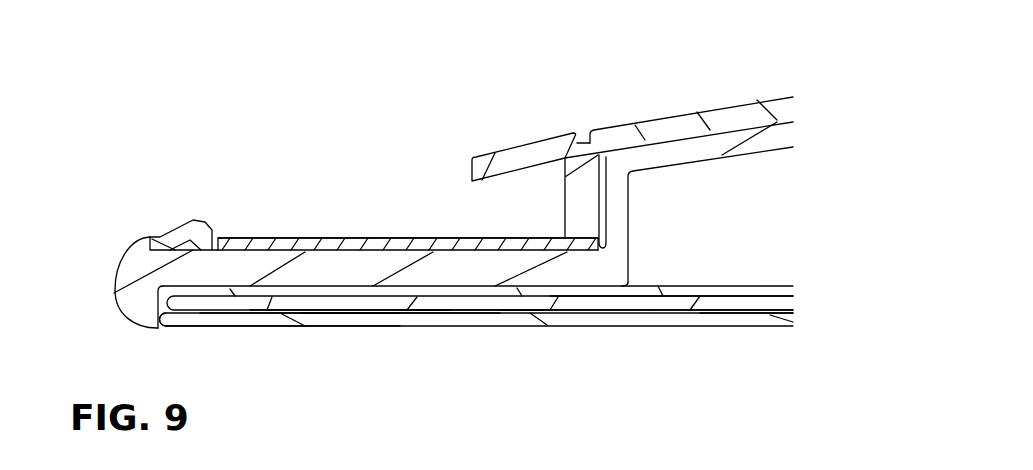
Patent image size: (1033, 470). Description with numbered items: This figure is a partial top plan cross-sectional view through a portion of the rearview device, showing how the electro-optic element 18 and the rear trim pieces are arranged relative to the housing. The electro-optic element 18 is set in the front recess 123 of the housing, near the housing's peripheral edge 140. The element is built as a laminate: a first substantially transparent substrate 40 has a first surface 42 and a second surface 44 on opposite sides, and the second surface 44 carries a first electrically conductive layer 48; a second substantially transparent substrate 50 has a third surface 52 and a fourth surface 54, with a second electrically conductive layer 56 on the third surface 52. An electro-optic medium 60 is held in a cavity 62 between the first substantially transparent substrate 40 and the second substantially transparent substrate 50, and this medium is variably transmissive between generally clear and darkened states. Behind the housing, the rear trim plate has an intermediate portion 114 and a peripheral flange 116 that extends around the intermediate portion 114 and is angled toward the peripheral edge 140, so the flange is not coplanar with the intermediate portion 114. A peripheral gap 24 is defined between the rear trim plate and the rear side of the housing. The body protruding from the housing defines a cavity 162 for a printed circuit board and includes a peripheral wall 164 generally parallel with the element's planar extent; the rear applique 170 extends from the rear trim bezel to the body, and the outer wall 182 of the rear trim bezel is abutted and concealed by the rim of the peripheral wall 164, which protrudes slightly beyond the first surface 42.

The electro-optic element 18 is at (500, 320).
The peripheral gap 24 is at (505, 210).
The first substantially transparent substrate 40 is at (253, 320).
The first surface 42 is at (185, 328).
The second surface 44 is at (320, 312).
The first electrically conductive layer 48 is at (387, 313).
The second substantially transparent substrate 50 is at (628, 300).
The third surface 52 is at (703, 311).
The fourth surface 54 is at (758, 296).
The second electrically conductive layer 56 is at (743, 311).
The electro-optic medium 60 is at (448, 311).
The cavity 62 is at (577, 311).
The intermediate portion 114 is at (682, 110).
The peripheral flange 116 is at (532, 146).
The front recess 123 is at (177, 292).
The peripheral edge 140 is at (113, 293).
The cavity 162 is at (740, 207).
The peripheral wall 164 is at (328, 262).
The rear applique 170 is at (250, 250).
The outer wall 182 is at (173, 248).